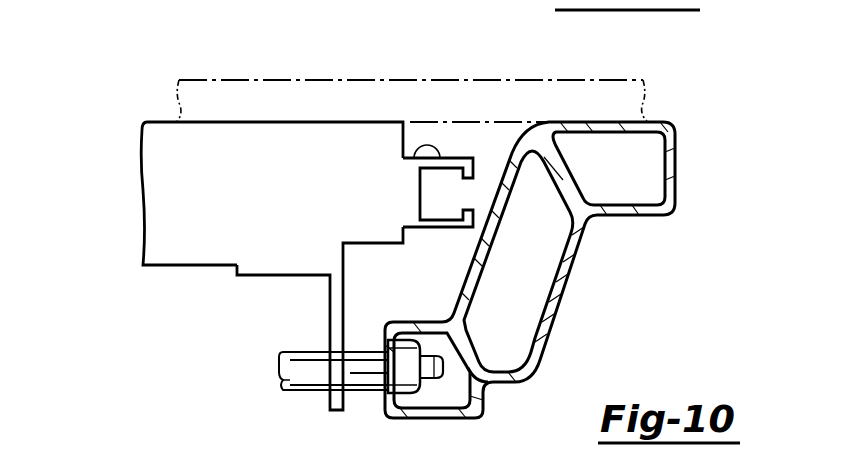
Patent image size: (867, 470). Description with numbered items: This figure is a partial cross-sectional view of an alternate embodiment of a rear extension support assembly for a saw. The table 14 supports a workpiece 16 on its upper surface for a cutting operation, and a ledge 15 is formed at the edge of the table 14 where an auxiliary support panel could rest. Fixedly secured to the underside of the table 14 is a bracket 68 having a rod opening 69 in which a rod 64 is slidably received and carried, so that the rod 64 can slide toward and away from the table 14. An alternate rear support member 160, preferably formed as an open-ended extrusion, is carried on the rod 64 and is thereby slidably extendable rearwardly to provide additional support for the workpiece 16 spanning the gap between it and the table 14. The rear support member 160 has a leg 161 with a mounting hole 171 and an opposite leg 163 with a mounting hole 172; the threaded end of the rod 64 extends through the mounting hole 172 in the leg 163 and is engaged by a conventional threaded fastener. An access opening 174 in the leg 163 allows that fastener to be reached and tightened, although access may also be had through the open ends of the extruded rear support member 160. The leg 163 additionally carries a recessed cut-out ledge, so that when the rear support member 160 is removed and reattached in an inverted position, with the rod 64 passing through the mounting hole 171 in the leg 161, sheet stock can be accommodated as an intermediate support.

The table 14 is at (200, 141).
The workpiece 16 is at (330, 103).
The ledge 15 is at (412, 157).
The bracket 68 is at (258, 275).
The rod opening 69 is at (334, 360).
The rod 64 is at (305, 382).
The rear support member 160 is at (522, 291).
The leg 161 is at (677, 205).
The mounting hole 171 is at (675, 170).
The leg 163 is at (402, 322).
The mounting hole 172 is at (383, 408).
The access opening 174 is at (448, 416).